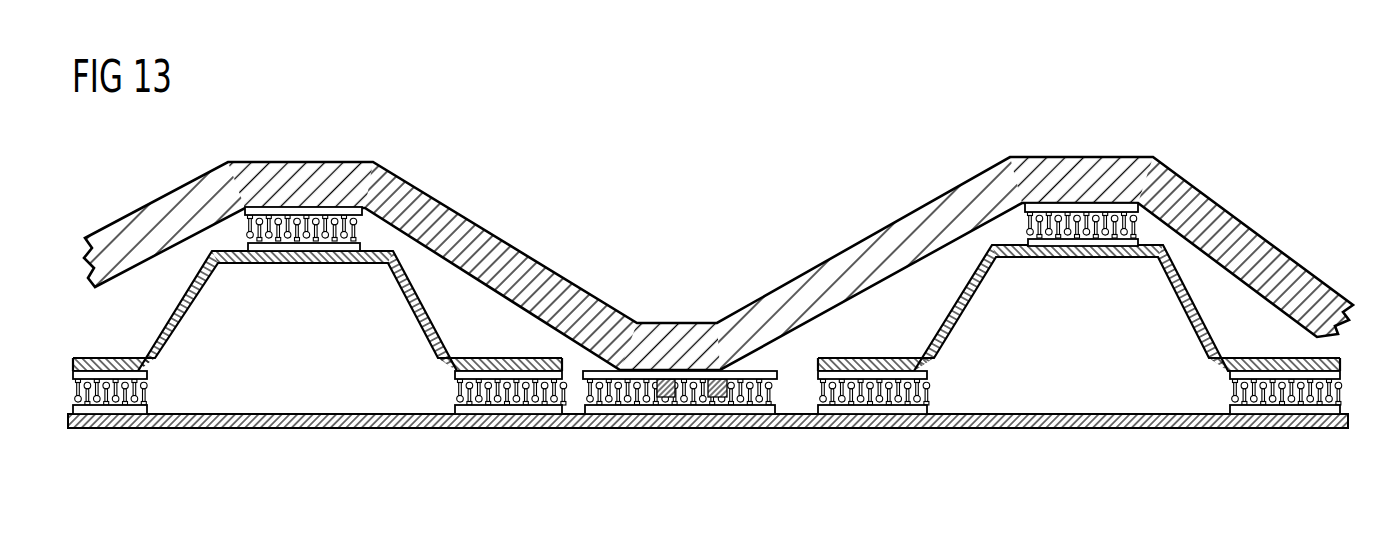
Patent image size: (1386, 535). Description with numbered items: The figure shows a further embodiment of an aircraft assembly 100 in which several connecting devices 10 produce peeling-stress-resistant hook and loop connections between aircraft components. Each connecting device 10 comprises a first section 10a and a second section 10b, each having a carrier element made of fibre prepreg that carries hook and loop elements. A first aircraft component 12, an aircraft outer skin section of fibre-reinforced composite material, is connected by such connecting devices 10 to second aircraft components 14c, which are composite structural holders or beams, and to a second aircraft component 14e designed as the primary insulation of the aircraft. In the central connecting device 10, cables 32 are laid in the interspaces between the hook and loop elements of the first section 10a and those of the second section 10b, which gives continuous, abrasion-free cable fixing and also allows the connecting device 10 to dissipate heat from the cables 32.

The optoelectronic device assembly 100 is at (1216, 92).
The connecting device 10 is at (707, 299).
The first section 10a is at (292, 252).
The second section 10b is at (302, 212).
The first aircraft component 12 is at (1060, 423).
The second aircraft component 14c is at (415, 300).
The second aircraft component 14e is at (1247, 245).
The cables 32 is at (716, 387).